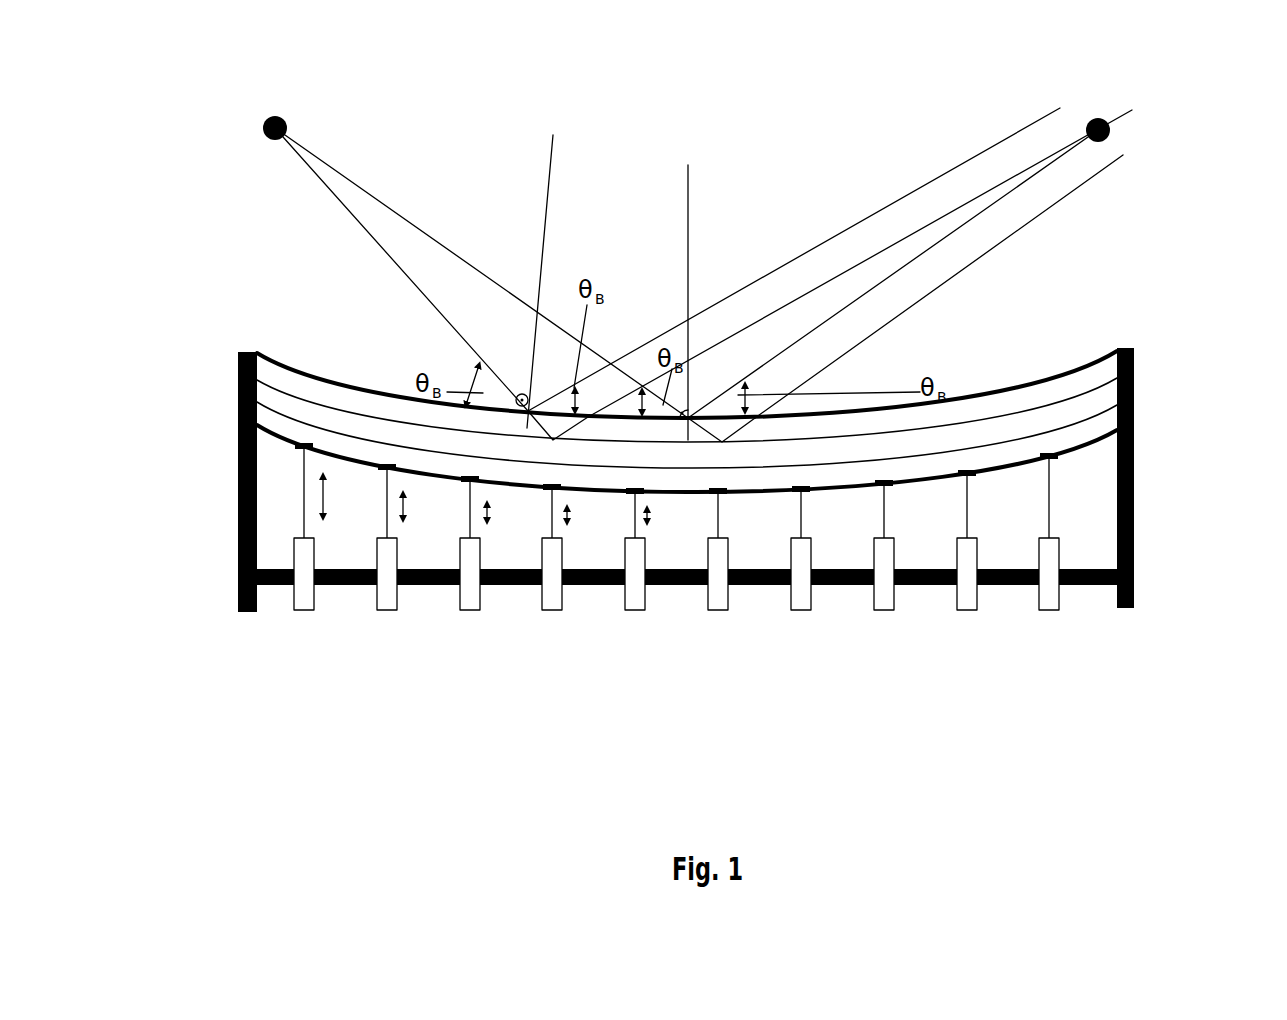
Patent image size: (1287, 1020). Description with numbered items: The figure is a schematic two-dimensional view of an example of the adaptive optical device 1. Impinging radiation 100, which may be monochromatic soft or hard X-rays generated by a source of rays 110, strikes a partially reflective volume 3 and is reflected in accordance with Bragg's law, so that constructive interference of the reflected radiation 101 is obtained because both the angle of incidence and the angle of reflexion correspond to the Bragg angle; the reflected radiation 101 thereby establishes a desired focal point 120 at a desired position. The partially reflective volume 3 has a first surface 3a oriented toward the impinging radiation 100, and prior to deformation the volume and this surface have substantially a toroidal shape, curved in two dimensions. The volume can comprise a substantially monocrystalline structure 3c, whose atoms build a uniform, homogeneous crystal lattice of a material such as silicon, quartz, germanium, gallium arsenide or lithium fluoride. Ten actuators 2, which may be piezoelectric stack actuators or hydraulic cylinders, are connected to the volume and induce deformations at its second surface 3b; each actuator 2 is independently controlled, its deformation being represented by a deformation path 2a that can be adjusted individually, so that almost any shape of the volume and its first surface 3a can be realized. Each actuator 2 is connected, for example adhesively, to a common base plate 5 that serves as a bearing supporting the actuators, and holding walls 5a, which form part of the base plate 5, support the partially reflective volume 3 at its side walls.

The adaptive optical device 1 is at (709, 463).
The actuator 2 is at (303, 598).
The deformation path 2a is at (325, 493).
The partially reflective volume 3 is at (687, 494).
The first surface 3a is at (1005, 388).
The second surface 3b is at (823, 490).
The monocrystalline structure 3c is at (872, 445).
The base plate 5 is at (682, 587).
The holding walls 5a is at (238, 460).
The impinging radiation 100 is at (481, 273).
The reflected radiation 101 is at (830, 275).
The source of rays 110 is at (279, 111).
The focal point 120 is at (1090, 133).